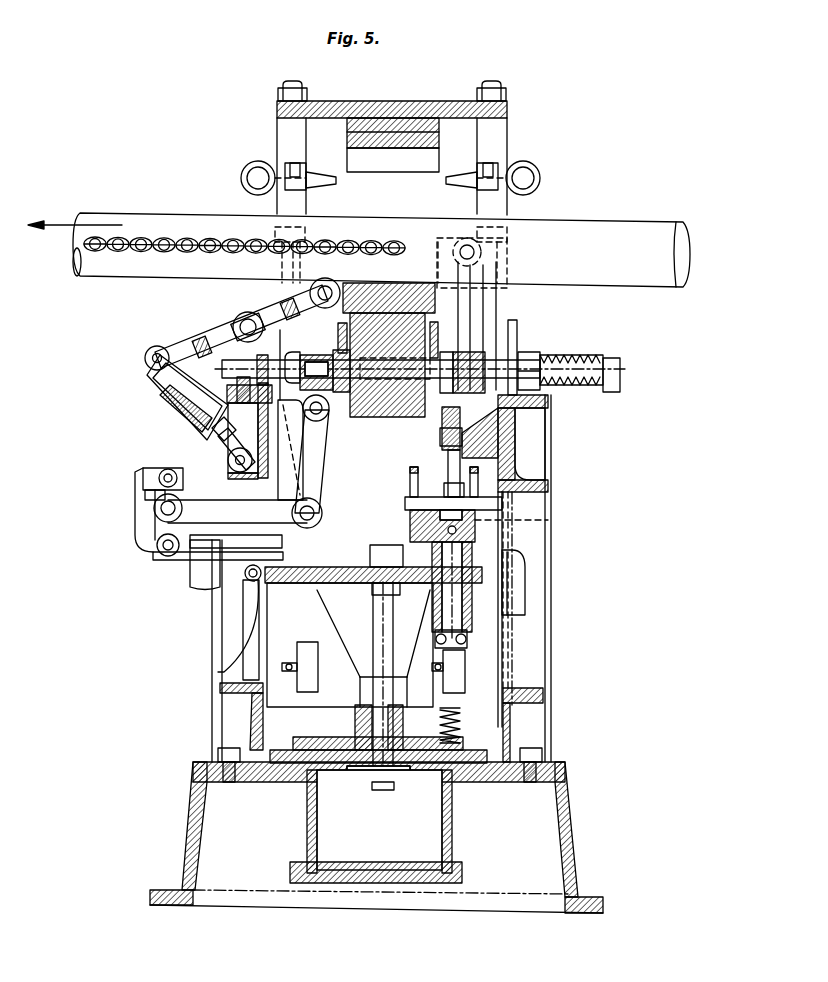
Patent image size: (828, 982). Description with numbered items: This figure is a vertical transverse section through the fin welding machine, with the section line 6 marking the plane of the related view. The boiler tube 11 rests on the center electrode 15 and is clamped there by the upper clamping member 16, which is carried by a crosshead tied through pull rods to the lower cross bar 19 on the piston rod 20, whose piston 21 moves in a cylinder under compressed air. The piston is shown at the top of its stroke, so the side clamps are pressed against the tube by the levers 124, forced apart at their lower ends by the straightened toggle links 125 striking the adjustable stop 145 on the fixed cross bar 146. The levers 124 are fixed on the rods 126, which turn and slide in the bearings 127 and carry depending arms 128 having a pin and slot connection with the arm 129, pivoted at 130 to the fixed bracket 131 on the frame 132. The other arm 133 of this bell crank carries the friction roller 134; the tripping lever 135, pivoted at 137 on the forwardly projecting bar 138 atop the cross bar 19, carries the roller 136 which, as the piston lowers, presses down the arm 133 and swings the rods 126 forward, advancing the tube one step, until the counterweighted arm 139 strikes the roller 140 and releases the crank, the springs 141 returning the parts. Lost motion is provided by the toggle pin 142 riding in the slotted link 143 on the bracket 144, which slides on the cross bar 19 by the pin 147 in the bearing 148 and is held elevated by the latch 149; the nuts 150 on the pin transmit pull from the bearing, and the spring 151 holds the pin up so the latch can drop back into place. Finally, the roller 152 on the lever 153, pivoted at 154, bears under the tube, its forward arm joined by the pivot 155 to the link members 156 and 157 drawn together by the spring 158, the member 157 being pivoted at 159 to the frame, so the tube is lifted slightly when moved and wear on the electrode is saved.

The section line 6 is at (472, 68).
The boiler tube 11 is at (160, 216).
The center electrode 15 is at (437, 298).
The clamping member 16 is at (385, 118).
The lower cross bar 19 is at (302, 590).
The piston rod 20 is at (360, 718).
The piston 21 is at (343, 780).
The levers 124 is at (465, 330).
The toggle links 125 is at (470, 520).
The rods 126 is at (200, 352).
The bearings 127 is at (535, 358).
The depending arms 128 is at (328, 412).
The arm 129 is at (316, 482).
The pivot 130 is at (320, 512).
The fixed bracket 131 is at (298, 448).
The frame 132 is at (258, 448).
The arm 133 is at (212, 508).
The friction roller 134 is at (150, 507).
The tripping lever 135 is at (142, 478).
The roller 136 is at (175, 468).
The pivot 137 is at (150, 546).
The forwardly projecting bar 138 is at (153, 557).
The counterweighted arm 139 is at (205, 562).
The roller 140 is at (247, 580).
The springs 141 is at (575, 386).
The toggle pin 142 is at (410, 500).
The slotted link 143 is at (410, 472).
The bracket 144 is at (408, 510).
The adjustable stop 145 is at (448, 470).
The fixed cross bar 146 is at (444, 418).
The pin 147 is at (455, 605).
The bearing 148 is at (470, 635).
The latch 149 is at (515, 575).
The nuts 150 is at (468, 662).
The spring 151 is at (465, 720).
The roller 152 is at (335, 286).
The lever 153 is at (310, 292).
The pivot 154 is at (236, 320).
The pivot 155 is at (152, 358).
The link member 156 is at (182, 397).
The link member 157 is at (206, 446).
The spring 158 is at (192, 420).
The pivot 159 is at (228, 462).